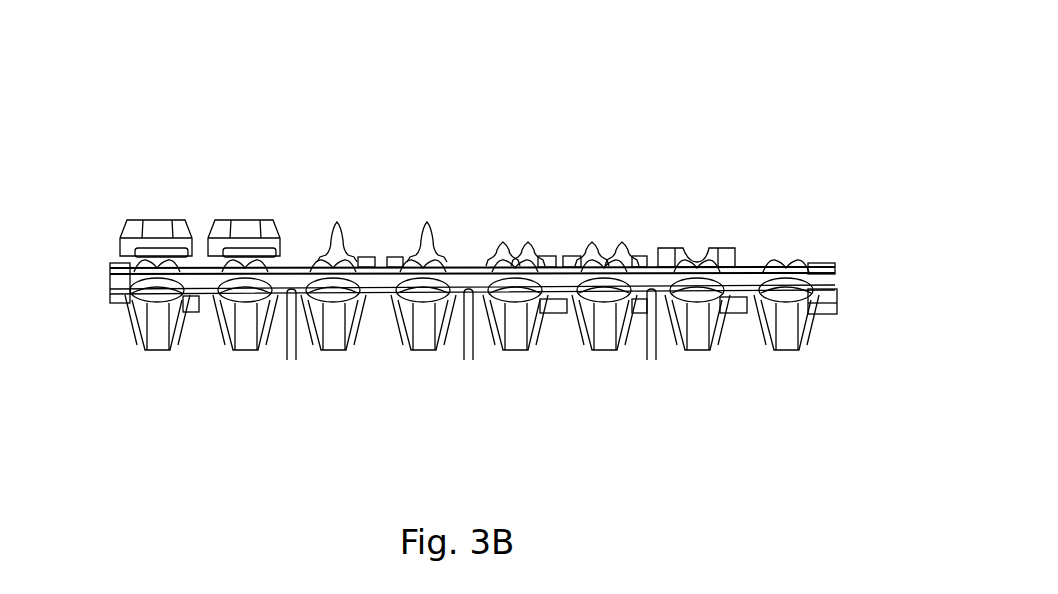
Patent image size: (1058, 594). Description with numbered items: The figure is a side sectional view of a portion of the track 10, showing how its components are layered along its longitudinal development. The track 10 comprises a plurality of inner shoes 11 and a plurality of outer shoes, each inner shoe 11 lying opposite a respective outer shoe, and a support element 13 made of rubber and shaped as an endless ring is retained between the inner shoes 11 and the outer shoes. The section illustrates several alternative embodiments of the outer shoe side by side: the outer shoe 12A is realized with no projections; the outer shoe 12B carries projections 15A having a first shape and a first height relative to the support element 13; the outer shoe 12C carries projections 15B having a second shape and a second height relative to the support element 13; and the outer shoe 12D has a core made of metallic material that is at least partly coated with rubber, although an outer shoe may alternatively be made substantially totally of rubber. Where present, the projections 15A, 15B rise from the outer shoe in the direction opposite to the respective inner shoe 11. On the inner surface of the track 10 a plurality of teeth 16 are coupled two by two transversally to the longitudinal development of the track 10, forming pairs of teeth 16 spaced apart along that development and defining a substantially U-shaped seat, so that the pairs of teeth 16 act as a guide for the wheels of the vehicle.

The track 10 is at (837, 97).
The inner shoe 11 is at (128, 288).
The outer shoe 12A is at (702, 268).
The outer shoe 12B is at (585, 267).
The outer shoe 12C is at (410, 265).
The outer shoe 12D is at (222, 263).
The support element 13 is at (828, 278).
The projections 15A is at (592, 242).
The projections 15B is at (427, 222).
The teeth 16 is at (157, 343).